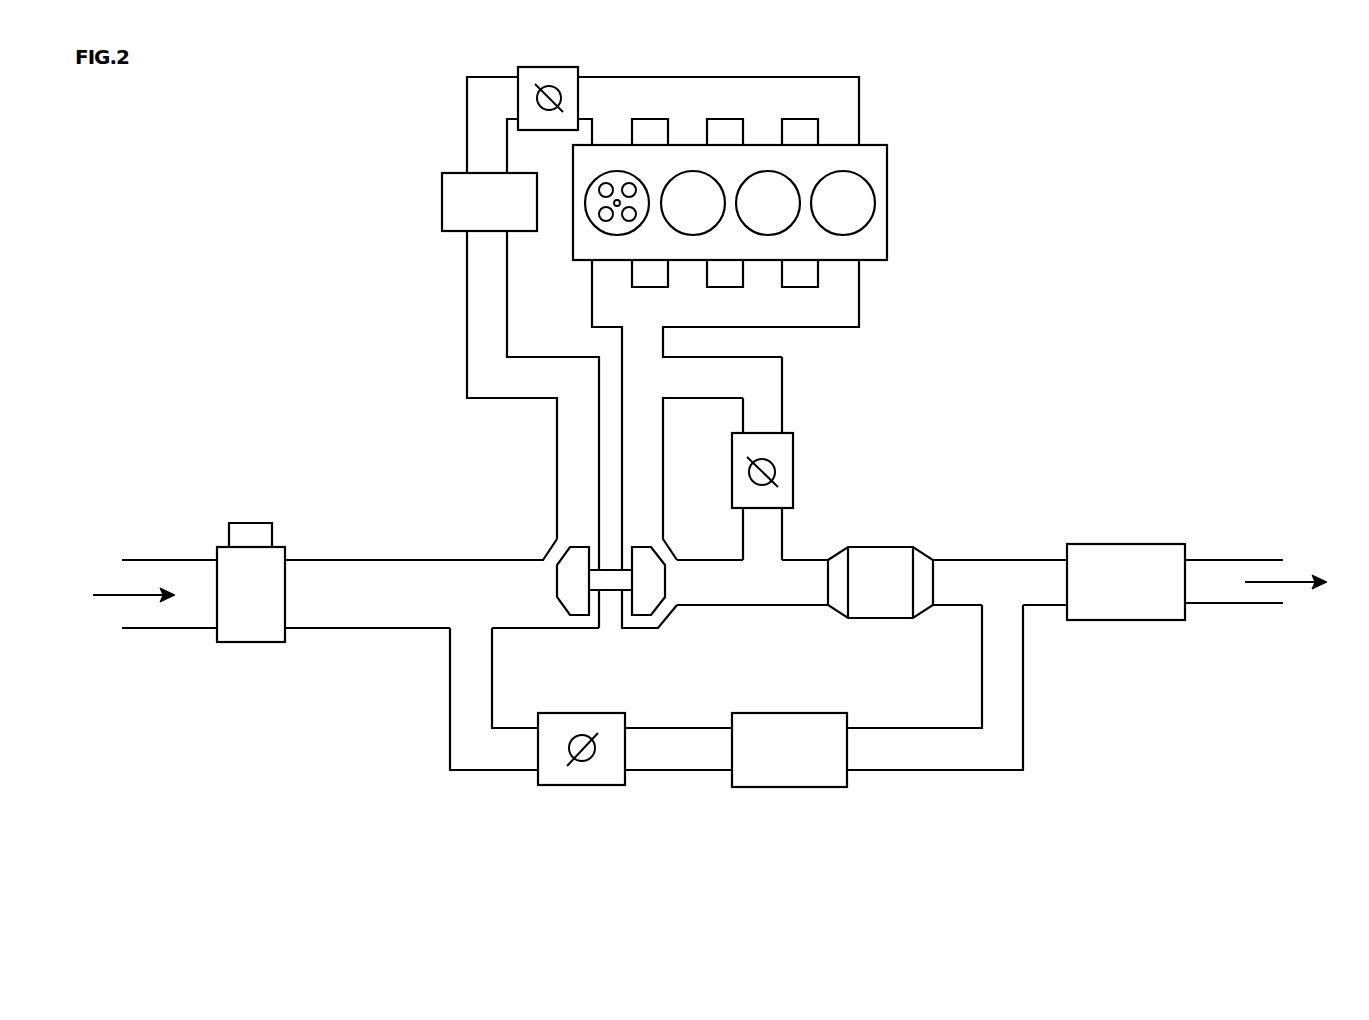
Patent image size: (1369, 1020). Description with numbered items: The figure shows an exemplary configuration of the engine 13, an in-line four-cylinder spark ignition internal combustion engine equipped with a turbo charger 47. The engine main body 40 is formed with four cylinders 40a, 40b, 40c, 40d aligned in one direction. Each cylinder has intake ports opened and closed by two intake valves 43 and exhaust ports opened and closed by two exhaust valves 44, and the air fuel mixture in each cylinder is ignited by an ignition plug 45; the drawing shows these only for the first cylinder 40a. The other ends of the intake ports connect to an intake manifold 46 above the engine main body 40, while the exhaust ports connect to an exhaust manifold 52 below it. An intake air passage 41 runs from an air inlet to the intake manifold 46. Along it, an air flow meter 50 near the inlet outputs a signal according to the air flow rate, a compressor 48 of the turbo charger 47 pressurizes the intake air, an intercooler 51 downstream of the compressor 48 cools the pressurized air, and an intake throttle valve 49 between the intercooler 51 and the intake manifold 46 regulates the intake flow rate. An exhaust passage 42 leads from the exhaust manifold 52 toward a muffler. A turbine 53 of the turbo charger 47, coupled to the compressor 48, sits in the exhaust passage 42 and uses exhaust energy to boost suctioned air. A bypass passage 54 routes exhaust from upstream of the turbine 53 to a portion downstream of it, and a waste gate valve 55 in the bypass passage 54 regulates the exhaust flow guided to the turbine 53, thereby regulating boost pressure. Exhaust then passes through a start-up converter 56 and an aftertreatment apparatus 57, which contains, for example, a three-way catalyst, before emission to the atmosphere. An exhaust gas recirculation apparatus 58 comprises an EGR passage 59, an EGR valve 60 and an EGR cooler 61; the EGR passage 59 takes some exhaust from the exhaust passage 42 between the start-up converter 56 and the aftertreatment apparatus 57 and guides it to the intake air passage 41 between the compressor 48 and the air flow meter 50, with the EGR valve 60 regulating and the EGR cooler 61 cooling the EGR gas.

The engine 13 is at (1088, 292).
The engine main body 40 is at (888, 183).
The cylinder 40a is at (617, 171).
The cylinder 40b is at (693, 171).
The cylinder 40c is at (768, 171).
The cylinder 40d is at (843, 171).
The intake air passage 41 is at (465, 328).
The exhaust passage 42 is at (990, 557).
The intake valve 43 is at (600, 188).
The exhaust valve 44 is at (602, 215).
The ignition plug 45 is at (615, 203).
The intake manifold 46 is at (862, 87).
The turbo charger 47 is at (645, 608).
The compressor 48 is at (570, 612).
The intake throttle valve 49 is at (520, 95).
The air flow meter 50 is at (251, 635).
The intercooler 51 is at (445, 205).
The exhaust manifold 52 is at (852, 295).
The turbine 53 is at (645, 595).
The bypass passage 54 is at (787, 386).
The waste gate valve 55 is at (795, 456).
The start-up converter 56 is at (880, 555).
The aftertreatment apparatus 57 is at (1127, 550).
The exhaust gas recirculation apparatus 58 is at (1025, 700).
The EGR passage 59 is at (947, 760).
The EGR valve 60 is at (602, 770).
The EGR cooler 61 is at (797, 772).